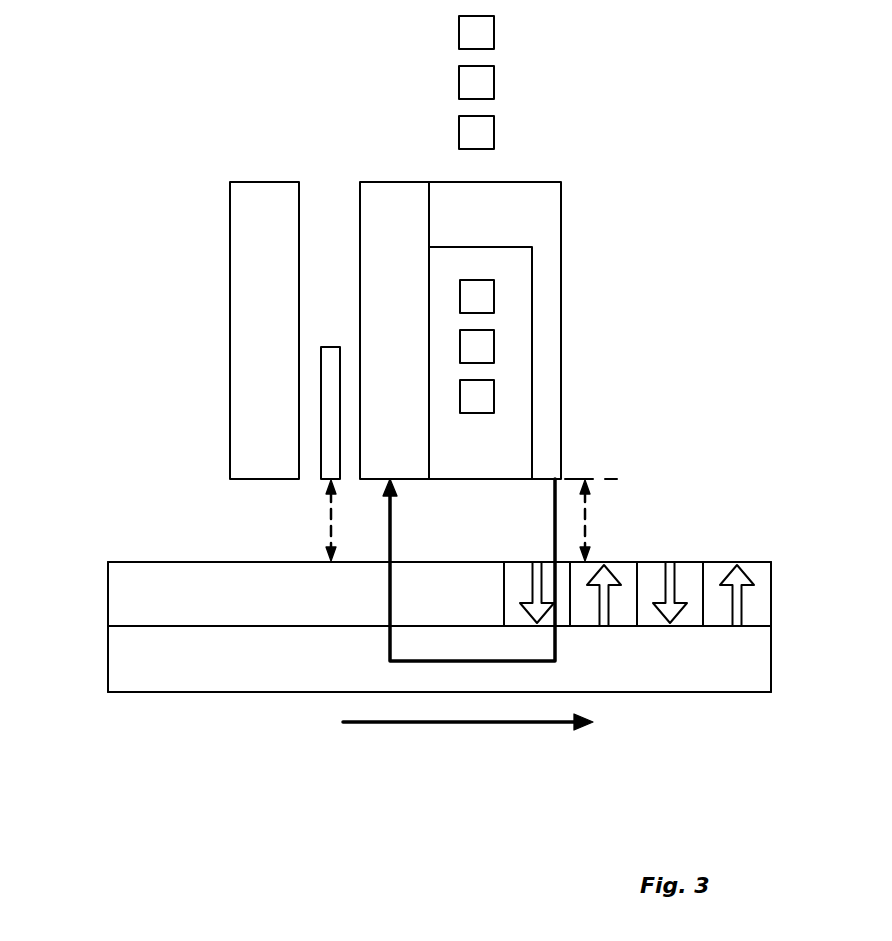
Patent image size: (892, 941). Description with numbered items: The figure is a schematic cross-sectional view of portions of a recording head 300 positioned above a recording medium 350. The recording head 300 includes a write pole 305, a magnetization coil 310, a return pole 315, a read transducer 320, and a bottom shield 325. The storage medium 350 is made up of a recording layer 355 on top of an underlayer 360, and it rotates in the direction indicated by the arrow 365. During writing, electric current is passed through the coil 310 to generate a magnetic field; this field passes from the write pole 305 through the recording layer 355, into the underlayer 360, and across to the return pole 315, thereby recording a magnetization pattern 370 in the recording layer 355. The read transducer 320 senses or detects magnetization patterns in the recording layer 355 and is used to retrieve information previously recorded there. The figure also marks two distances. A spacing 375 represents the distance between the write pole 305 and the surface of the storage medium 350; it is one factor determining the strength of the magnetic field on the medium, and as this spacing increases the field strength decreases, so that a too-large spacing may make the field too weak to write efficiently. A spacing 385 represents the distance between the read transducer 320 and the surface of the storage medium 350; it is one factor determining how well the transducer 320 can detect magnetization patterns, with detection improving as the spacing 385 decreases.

The recording head 300 is at (590, 162).
The write pole 305 is at (557, 275).
The magnetization coil 310 is at (463, 337).
The return pole 315 is at (374, 236).
The read transducer 320 is at (328, 410).
The bottom shield 325 is at (243, 258).
The recording medium 350 is at (775, 648).
The recording layer 355 is at (112, 580).
The underlayer 360 is at (170, 660).
The arrow 365 is at (418, 724).
The magnetization pattern 370 is at (686, 562).
The spacing 375 is at (588, 510).
The spacing 385 is at (332, 527).